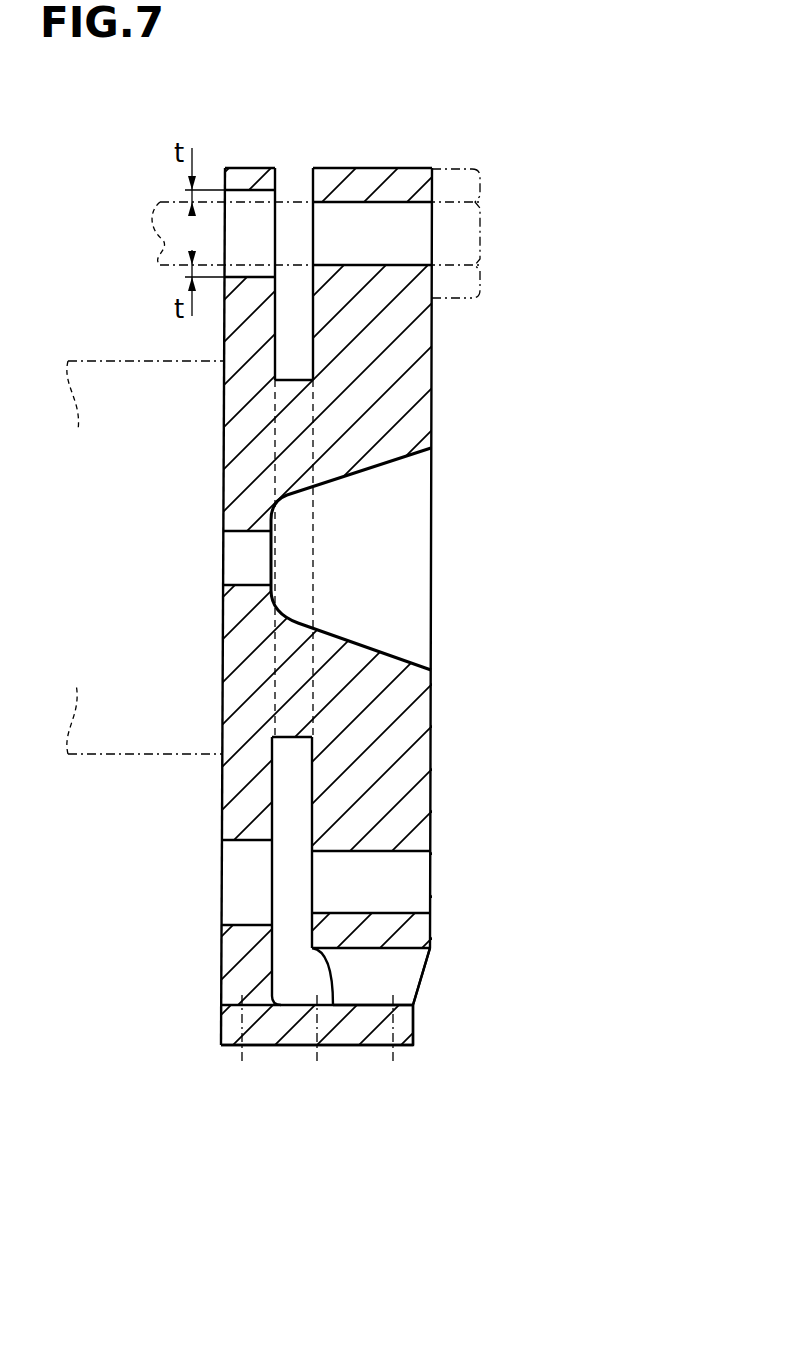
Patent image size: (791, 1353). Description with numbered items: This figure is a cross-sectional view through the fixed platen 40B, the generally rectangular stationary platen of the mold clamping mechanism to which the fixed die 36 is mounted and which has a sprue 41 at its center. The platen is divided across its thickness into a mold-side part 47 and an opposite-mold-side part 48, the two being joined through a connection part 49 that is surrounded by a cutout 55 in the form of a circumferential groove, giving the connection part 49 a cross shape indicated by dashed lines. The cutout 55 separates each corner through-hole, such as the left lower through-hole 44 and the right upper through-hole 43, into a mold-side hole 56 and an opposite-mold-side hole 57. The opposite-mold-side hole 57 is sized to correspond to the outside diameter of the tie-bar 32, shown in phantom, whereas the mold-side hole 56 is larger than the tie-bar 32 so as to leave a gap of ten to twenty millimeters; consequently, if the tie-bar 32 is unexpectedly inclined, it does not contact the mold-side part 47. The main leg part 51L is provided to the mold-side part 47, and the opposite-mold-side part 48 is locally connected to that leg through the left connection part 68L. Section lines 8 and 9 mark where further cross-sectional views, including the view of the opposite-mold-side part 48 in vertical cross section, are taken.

The fixed platen 40B is at (524, 134).
The tie-bar 32 is at (175, 202).
The fixed die 36 is at (105, 361).
The sprue 41 is at (383, 460).
The right upper through-hole 43 is at (458, 228).
The left lower through-hole 44 is at (445, 894).
The mold-side part 47 is at (223, 447).
The opposite-mold-side part 48 is at (410, 342).
The connection part 49 is at (298, 417).
The left main leg part 51L is at (340, 1048).
The cutout 55 is at (297, 330).
The mold-side hole 56 is at (246, 210).
The opposite-mold-side hole 57 is at (381, 211).
The left connection part 68L is at (405, 978).
The section line 8 is at (293, 122).
The line 9- 9 is at (380, 122).